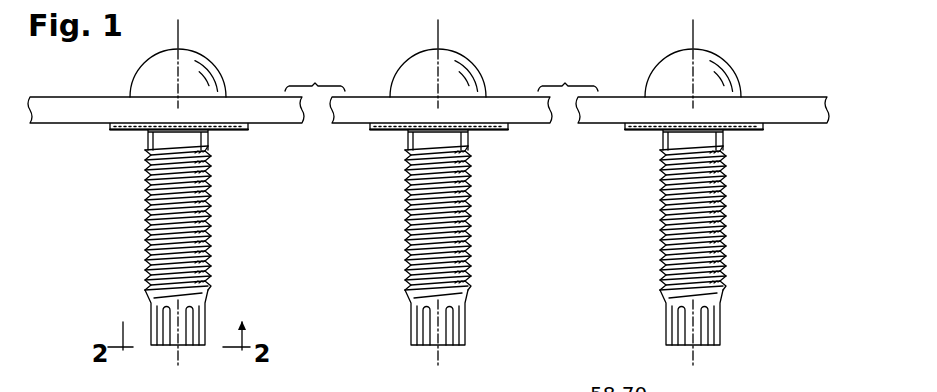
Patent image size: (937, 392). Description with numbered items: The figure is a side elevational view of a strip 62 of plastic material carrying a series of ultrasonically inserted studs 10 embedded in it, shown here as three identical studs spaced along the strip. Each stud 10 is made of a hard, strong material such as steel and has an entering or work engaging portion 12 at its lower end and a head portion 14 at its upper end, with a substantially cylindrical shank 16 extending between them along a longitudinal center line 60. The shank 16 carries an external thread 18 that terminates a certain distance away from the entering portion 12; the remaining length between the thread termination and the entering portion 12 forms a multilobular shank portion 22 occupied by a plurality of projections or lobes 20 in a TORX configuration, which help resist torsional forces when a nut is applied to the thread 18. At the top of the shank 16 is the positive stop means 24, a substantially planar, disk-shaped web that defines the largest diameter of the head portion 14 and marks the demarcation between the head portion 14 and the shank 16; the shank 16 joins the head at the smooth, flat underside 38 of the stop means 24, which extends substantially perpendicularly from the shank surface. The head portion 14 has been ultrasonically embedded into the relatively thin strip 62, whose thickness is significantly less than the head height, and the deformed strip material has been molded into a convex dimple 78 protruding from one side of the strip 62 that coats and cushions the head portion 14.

The stud 10 is at (417, 264).
The entering portion 12 is at (441, 323).
The head portion 14 is at (142, 131).
The shank 16 is at (148, 222).
The external thread 18 is at (205, 247).
The lobes 20 is at (165, 320).
The multilobular shank portion 22 is at (153, 346).
The positive stop means 24 is at (255, 129).
The underside 38 is at (222, 131).
The longitudinal center line 60 is at (178, 39).
The strip 62 is at (71, 102).
The dimple 78 is at (205, 58).